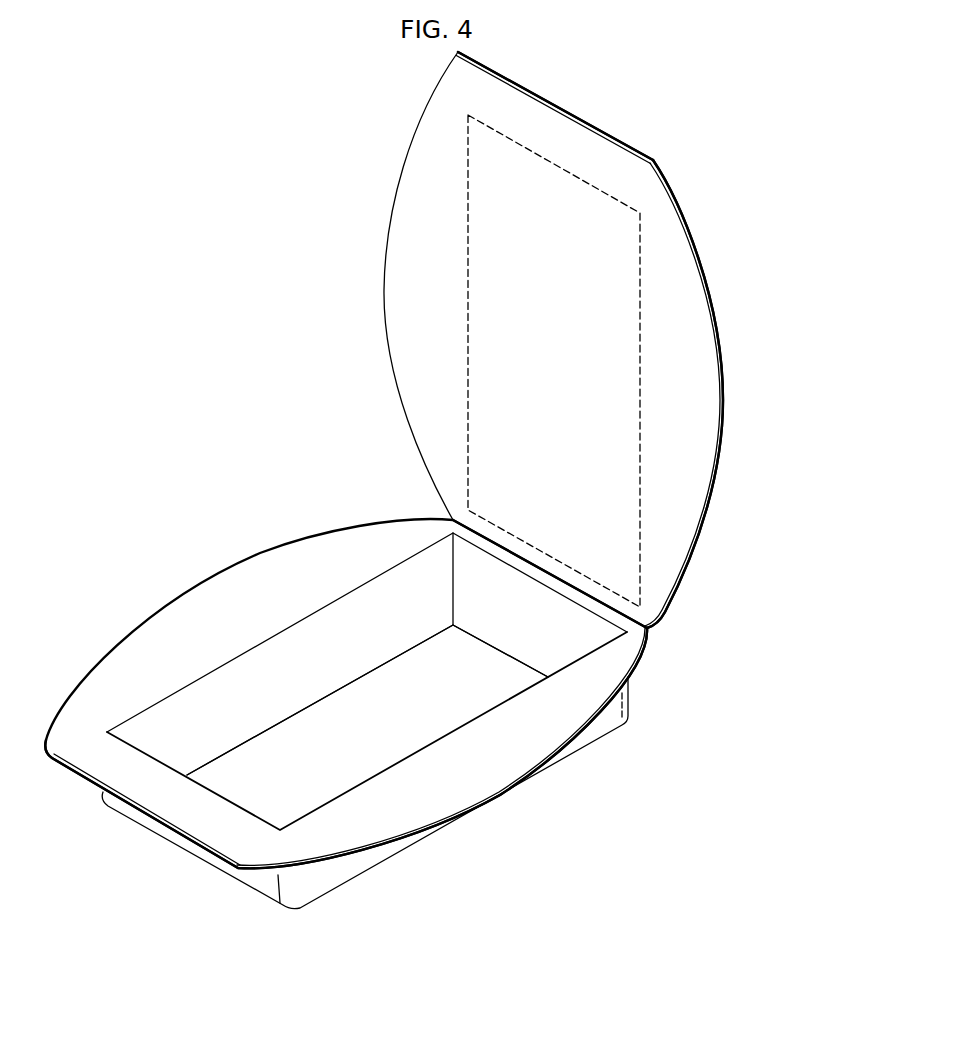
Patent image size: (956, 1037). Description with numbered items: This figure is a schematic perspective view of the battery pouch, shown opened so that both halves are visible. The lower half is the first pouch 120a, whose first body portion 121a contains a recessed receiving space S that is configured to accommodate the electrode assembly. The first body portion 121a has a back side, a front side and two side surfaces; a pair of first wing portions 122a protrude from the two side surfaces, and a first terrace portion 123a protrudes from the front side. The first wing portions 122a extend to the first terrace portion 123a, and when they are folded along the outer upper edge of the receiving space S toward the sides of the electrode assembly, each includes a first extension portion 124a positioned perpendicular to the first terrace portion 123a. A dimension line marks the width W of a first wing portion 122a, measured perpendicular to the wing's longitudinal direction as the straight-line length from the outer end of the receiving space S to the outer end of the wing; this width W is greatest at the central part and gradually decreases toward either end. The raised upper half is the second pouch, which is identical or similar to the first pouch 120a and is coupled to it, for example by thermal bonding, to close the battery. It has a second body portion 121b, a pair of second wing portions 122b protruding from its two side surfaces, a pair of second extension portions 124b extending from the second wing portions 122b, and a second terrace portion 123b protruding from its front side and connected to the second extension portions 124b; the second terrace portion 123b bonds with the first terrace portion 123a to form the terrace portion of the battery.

The first pouch 120a is at (512, 902).
The first body portion 121a is at (315, 793).
The first wing portions 122a is at (335, 583).
The first terrace portion 123a is at (185, 812).
The first extension portions 124a is at (63, 743).
The second extension portions 124b is at (458, 73).
The second terrace portion 123b is at (583, 155).
The second body portion 121b is at (617, 247).
The second wing portions 122b is at (668, 272).
The receiving space S is at (292, 750).
The width W is at (565, 745).